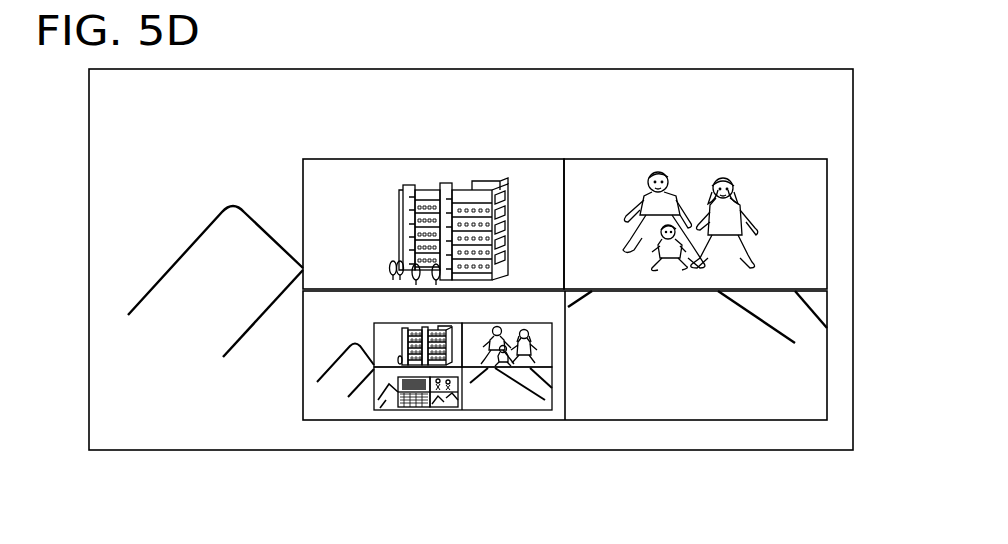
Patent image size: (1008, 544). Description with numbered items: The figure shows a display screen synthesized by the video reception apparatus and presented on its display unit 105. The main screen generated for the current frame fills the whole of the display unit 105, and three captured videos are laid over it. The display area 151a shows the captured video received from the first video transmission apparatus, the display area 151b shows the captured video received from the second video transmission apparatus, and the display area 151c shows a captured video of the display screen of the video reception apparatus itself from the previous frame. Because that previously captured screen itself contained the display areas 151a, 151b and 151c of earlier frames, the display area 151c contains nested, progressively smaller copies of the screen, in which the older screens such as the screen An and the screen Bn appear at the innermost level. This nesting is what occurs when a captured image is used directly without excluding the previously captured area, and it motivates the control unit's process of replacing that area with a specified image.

The display unit 105 is at (853, 180).
The display area 151a is at (505, 158).
The display area 151b is at (772, 158).
The display area 151c is at (303, 392).
The screen An is at (396, 375).
The screen Bn is at (456, 378).